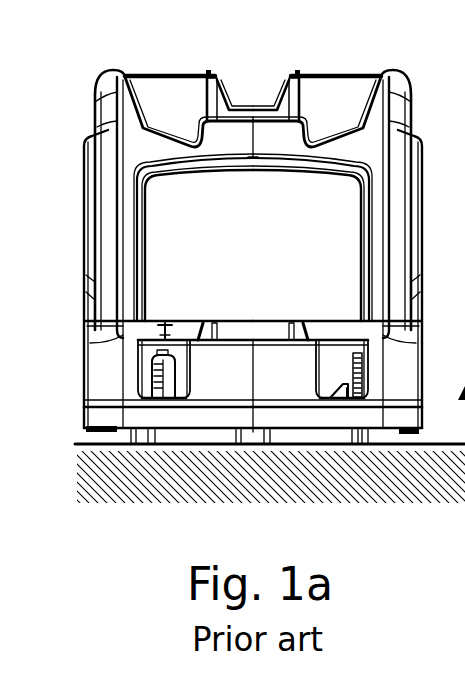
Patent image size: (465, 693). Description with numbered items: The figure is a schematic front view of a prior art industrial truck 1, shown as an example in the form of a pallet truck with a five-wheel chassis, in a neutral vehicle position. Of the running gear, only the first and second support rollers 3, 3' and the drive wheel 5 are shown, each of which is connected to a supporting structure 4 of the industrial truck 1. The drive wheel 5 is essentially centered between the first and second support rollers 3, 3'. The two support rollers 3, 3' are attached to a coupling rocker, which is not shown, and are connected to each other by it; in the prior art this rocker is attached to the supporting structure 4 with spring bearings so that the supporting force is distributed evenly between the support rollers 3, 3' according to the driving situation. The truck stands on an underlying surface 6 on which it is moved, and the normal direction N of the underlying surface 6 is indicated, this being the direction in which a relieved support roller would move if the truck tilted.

The industrial truck 1 is at (245, 223).
The first support roller 3 is at (75, 415).
The second support roller 3' is at (412, 408).
The supporting structure 4 is at (314, 373).
The drive wheel 5 is at (231, 427).
The underlying surface 6 is at (158, 473).
The normal direction N is at (464, 422).